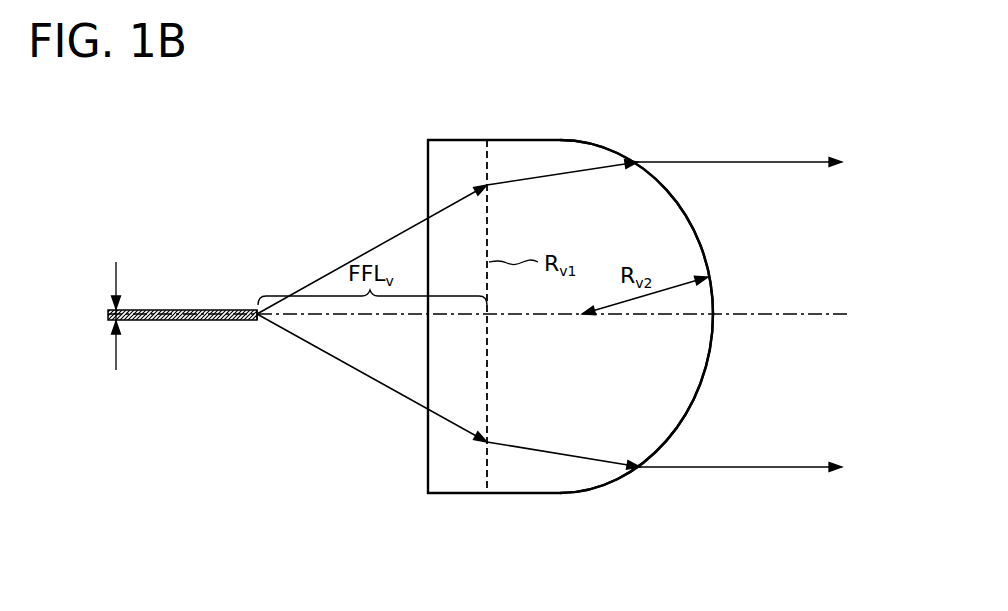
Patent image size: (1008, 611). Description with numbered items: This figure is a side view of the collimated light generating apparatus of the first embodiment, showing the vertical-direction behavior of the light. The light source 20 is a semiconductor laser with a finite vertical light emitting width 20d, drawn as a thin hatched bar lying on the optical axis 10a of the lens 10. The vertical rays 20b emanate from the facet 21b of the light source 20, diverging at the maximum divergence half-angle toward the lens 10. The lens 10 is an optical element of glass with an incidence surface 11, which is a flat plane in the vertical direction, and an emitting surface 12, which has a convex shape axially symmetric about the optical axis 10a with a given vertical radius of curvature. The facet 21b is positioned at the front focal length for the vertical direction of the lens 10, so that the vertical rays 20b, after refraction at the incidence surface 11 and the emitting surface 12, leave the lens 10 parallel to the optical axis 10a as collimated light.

The lens 10 is at (541, 139).
The optical axis 10a is at (503, 314).
The incidence surface 11 is at (489, 219).
The emitting surface 12 is at (697, 228).
The light source 20 is at (180, 309).
The vertical rays 20b is at (366, 252).
The vertical light emitting width 20d is at (91, 316).
The facet 21b is at (240, 322).